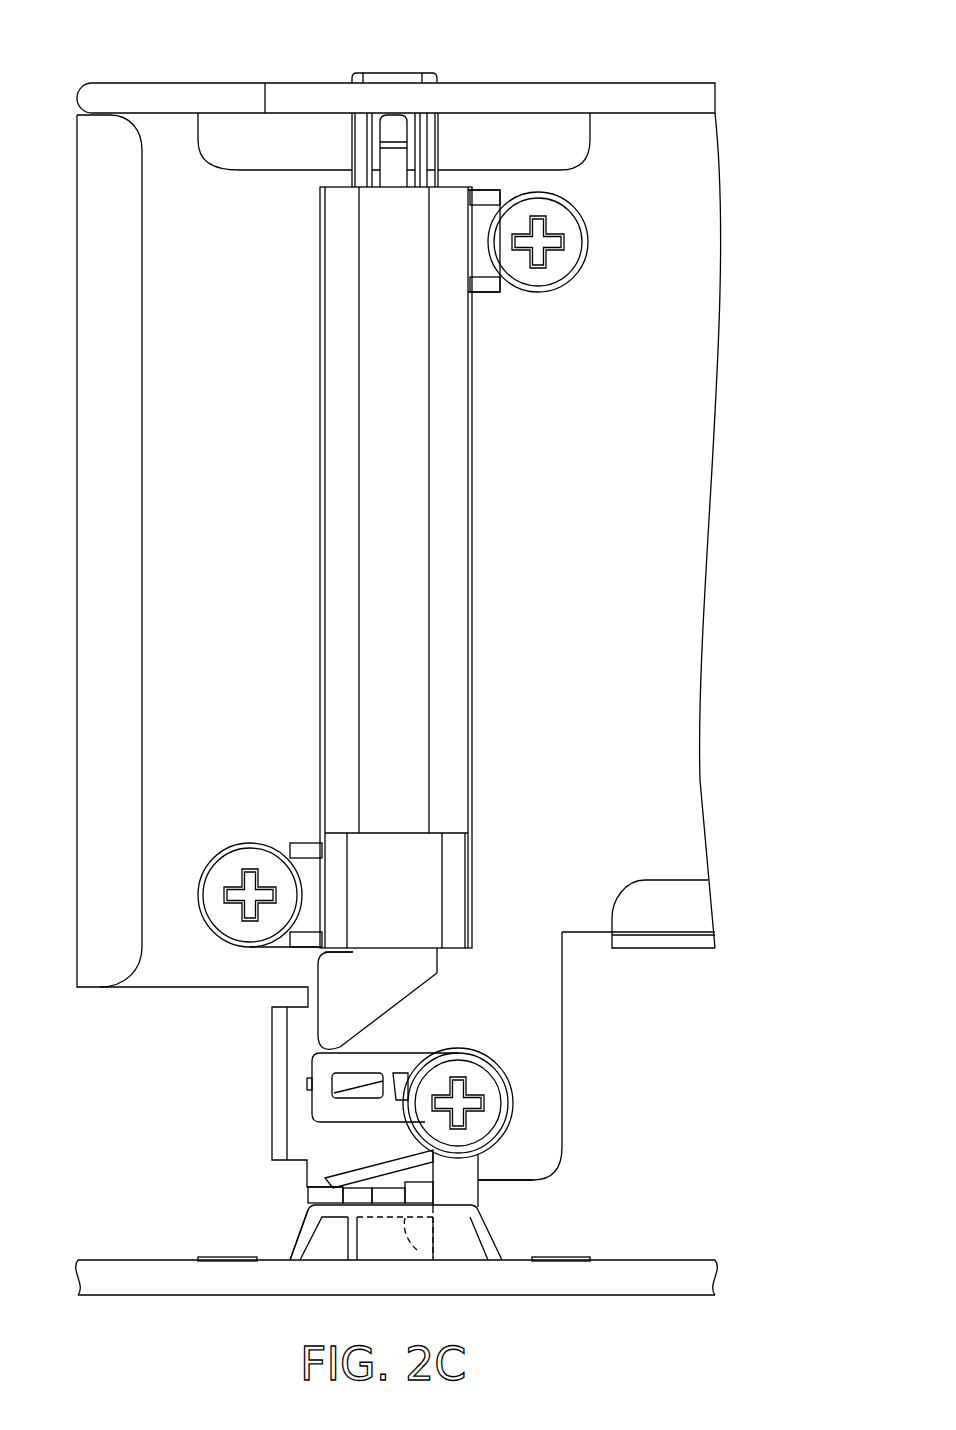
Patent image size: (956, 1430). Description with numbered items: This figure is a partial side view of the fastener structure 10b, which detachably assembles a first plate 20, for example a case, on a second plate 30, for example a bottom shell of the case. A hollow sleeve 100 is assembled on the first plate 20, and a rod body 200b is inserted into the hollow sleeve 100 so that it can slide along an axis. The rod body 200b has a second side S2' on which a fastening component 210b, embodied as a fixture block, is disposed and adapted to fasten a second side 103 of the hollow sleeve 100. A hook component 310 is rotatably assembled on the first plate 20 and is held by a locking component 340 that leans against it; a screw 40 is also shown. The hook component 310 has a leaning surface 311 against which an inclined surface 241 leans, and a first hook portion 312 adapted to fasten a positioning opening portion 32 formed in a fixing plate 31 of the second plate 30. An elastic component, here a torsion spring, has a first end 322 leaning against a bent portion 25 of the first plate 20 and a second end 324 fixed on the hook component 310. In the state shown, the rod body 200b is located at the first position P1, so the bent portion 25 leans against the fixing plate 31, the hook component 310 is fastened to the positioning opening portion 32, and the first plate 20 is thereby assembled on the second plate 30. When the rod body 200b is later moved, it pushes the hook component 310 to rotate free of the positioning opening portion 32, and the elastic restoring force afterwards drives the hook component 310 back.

The first plate 20 is at (638, 133).
The second side S2' is at (400, 41).
The fastener structure 10b is at (303, 466).
The rod body 200b is at (350, 155).
The fastening component 210b is at (385, 133).
The hollow sleeve 100 is at (447, 511).
The second side 103 is at (452, 183).
The screw 40 is at (230, 872).
The inclined surface 241 is at (417, 993).
The leaning surface 311 is at (386, 1048).
The second end 324 is at (310, 1085).
The locking component 340 is at (482, 1125).
The hook component 310 is at (512, 1093).
The first end 322 is at (337, 1176).
The bent portion 25 is at (320, 1195).
The positioning opening portion 32 is at (395, 1216).
The fixing plate 31 is at (300, 1236).
The first hook portion 312 is at (453, 1245).
The second plate 30 is at (665, 1268).
The first position P1 is at (805, 1321).